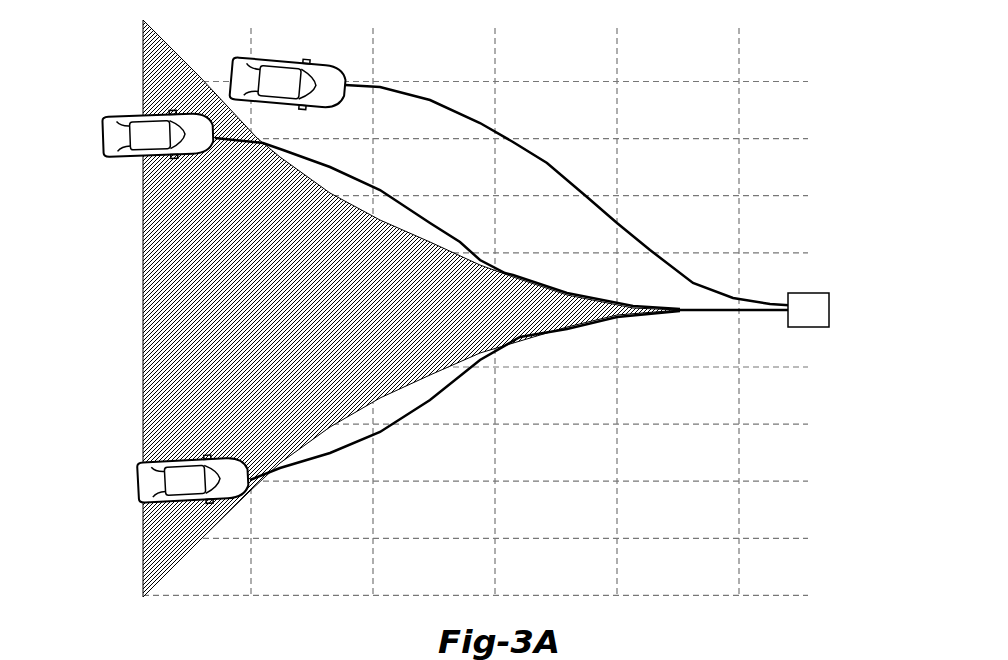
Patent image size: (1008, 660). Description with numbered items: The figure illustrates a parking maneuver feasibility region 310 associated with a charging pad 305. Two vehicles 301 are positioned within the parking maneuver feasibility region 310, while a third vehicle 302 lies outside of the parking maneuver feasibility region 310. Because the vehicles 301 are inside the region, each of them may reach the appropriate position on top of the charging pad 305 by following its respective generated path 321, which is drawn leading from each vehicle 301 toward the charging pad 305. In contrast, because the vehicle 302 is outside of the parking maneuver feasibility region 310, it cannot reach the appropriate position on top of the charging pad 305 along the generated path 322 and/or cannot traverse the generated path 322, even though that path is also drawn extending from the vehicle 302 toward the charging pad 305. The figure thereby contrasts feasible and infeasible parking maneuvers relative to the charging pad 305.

The vehicles 301 is at (103, 135).
The vehicle 302 is at (268, 80).
The charging pad 305 is at (829, 310).
The parking maneuver feasibility region 310 is at (304, 316).
The generated paths 321 is at (462, 244).
The generated path 322 is at (628, 235).